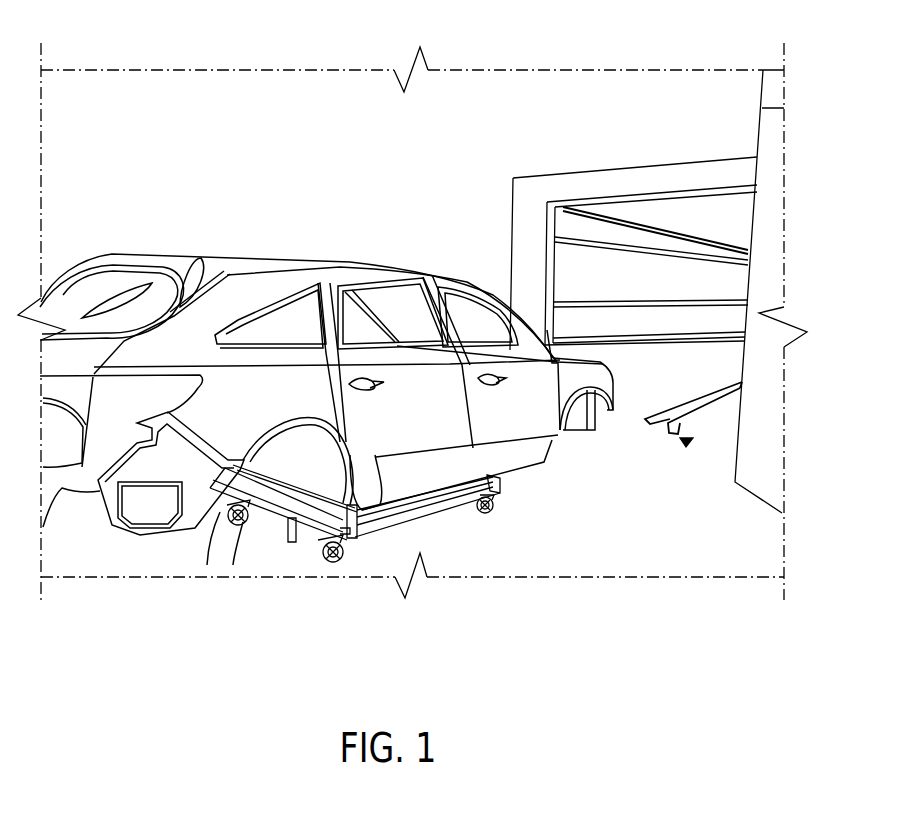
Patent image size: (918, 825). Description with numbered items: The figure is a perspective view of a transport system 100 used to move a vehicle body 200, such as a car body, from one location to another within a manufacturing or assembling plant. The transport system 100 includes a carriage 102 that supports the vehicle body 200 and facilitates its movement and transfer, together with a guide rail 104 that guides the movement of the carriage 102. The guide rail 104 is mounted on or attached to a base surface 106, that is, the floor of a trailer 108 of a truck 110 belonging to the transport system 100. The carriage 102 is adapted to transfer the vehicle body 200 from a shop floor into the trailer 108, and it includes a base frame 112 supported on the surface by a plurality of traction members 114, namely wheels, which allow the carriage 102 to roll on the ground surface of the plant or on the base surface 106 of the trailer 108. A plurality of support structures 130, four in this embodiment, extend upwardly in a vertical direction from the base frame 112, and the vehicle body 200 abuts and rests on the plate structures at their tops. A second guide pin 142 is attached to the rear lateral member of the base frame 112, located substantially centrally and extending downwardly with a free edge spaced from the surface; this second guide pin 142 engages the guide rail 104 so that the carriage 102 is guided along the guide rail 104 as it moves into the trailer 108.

The transport system 100 is at (260, 556).
The carriage 102 is at (264, 514).
The guide rail 104 is at (686, 441).
The base surface 106 is at (719, 412).
The trailer 108 is at (536, 193).
The truck 110 is at (740, 182).
The base frame 112 is at (437, 512).
The traction members 114 is at (228, 517).
The support structures 130 is at (334, 566).
The second guide pin 142 is at (295, 543).
The vehicle body 200 is at (238, 265).